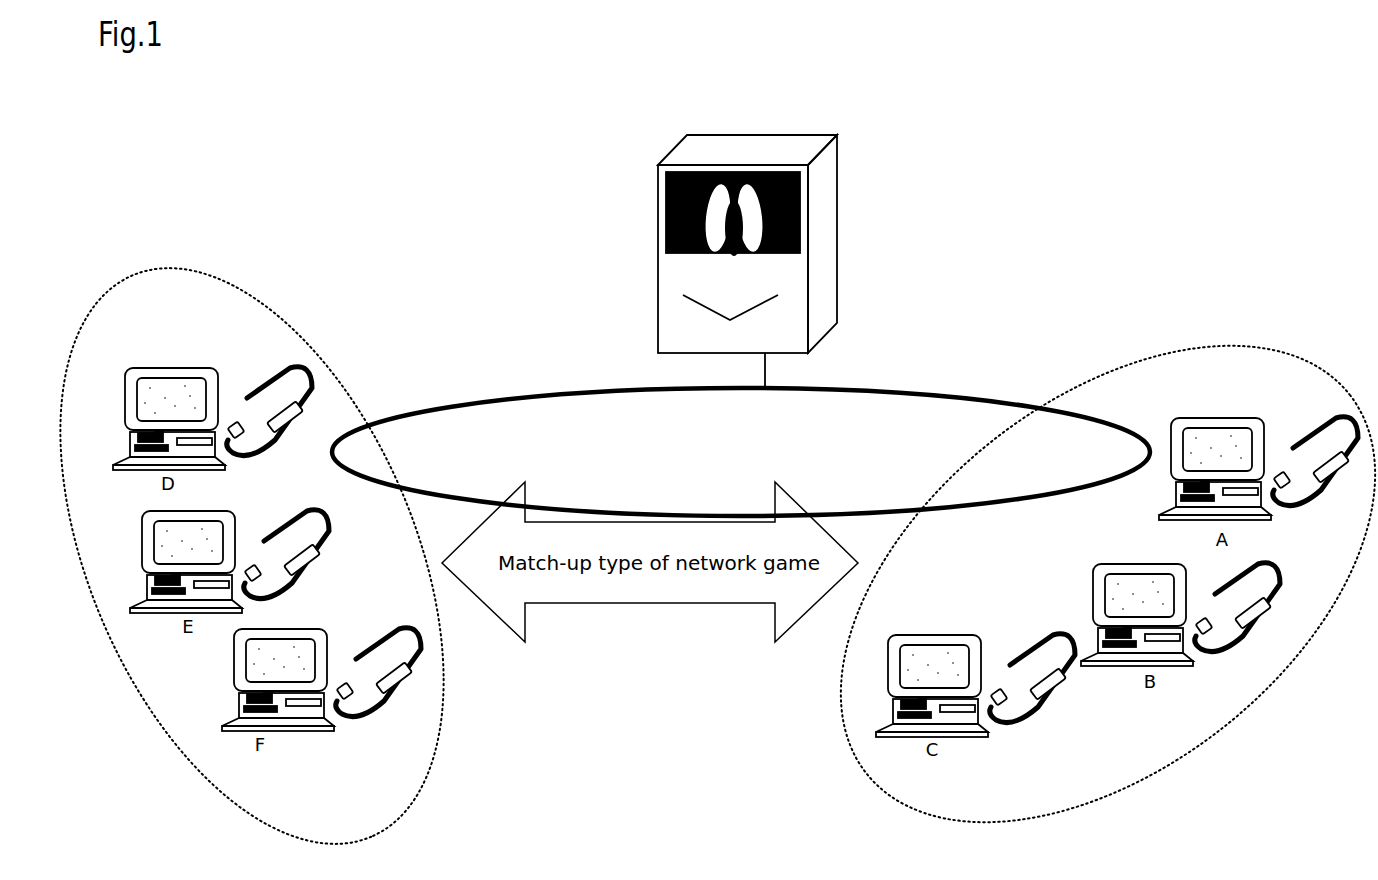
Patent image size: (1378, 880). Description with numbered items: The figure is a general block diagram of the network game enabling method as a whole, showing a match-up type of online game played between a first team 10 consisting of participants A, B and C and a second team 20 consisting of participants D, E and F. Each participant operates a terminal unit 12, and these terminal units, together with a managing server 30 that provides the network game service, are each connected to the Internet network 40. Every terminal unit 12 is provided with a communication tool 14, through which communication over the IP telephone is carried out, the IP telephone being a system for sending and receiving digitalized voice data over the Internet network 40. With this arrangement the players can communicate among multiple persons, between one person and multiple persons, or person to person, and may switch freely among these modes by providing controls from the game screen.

The first team 10 is at (1244, 343).
The second team 20 is at (242, 300).
The terminal unit 12 is at (150, 373).
The communication tool 14 is at (258, 456).
The managing server 30 is at (675, 282).
The Internet network 40 is at (440, 412).